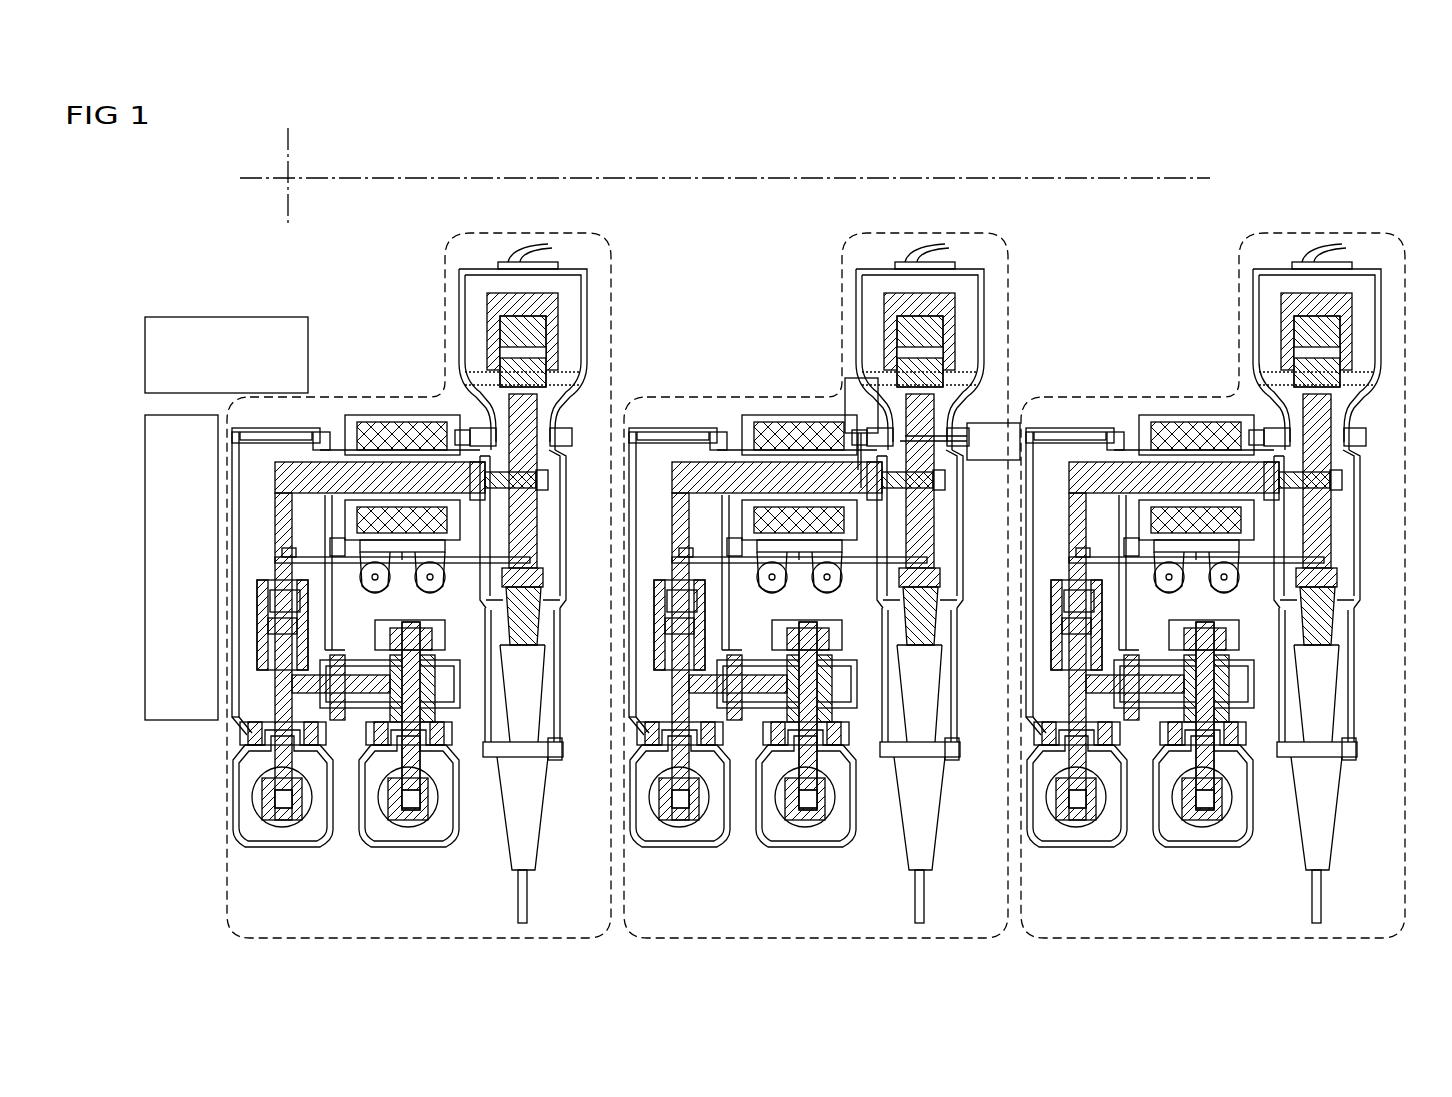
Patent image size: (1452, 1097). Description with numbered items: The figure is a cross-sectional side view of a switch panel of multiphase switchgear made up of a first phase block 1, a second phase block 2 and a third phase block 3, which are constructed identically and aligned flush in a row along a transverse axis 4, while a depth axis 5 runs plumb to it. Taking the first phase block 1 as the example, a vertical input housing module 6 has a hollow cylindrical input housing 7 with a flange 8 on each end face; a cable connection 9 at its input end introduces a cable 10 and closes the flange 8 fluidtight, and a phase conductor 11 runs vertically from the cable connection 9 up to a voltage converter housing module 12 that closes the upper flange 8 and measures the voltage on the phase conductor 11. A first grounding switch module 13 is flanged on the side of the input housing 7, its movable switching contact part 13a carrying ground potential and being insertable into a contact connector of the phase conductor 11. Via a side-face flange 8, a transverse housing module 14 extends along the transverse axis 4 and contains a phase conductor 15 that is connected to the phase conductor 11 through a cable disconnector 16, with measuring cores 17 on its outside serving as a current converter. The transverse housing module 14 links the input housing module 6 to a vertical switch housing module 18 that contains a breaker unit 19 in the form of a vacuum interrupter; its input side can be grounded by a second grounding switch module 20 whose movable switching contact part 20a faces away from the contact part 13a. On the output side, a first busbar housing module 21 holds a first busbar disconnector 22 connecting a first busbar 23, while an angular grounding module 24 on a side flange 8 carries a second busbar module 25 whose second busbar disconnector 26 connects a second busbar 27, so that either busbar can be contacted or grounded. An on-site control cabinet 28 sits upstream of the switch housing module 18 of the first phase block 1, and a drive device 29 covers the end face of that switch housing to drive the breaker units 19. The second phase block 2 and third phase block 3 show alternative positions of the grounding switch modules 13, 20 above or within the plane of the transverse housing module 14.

The first phase block 1 is at (296, 393).
The second phase block 2 is at (712, 396).
The third phase block 3 is at (1153, 396).
The transverse axis 4 is at (705, 180).
The depth axis 5 is at (288, 182).
The vertical input housing module 6 is at (562, 636).
The input housing 7 is at (478, 610).
The flange 8 is at (324, 433).
The cable connection 9 is at (548, 838).
The cable 10 is at (518, 900).
The phase conductor 11 is at (560, 526).
The voltage converter housing module 12 is at (592, 345).
The first grounding switch module 13 is at (372, 510).
The movable switching contact part 13a is at (403, 545).
The transverse housing module 14 is at (340, 432).
The phase conductor 15 is at (298, 482).
The cable disconnector 16 is at (548, 482).
The measuring cores 17 is at (360, 425).
The vertical switch housing module 18 is at (236, 598).
The breaker unit 19 is at (262, 640).
The second grounding switch module 20 is at (340, 546).
The movable switching contact part 20a is at (290, 558).
The first busbar housing module 21 is at (285, 848).
The first busbar disconnector 22 is at (272, 782).
The first busbar 23 is at (305, 812).
The angular grounding module 24 is at (355, 703).
The second busbar module 25 is at (412, 848).
The second busbar disconnector 26 is at (430, 783).
The second busbar 27 is at (425, 818).
The on-site control cabinet 28 is at (145, 498).
The drive device 29 is at (197, 317).